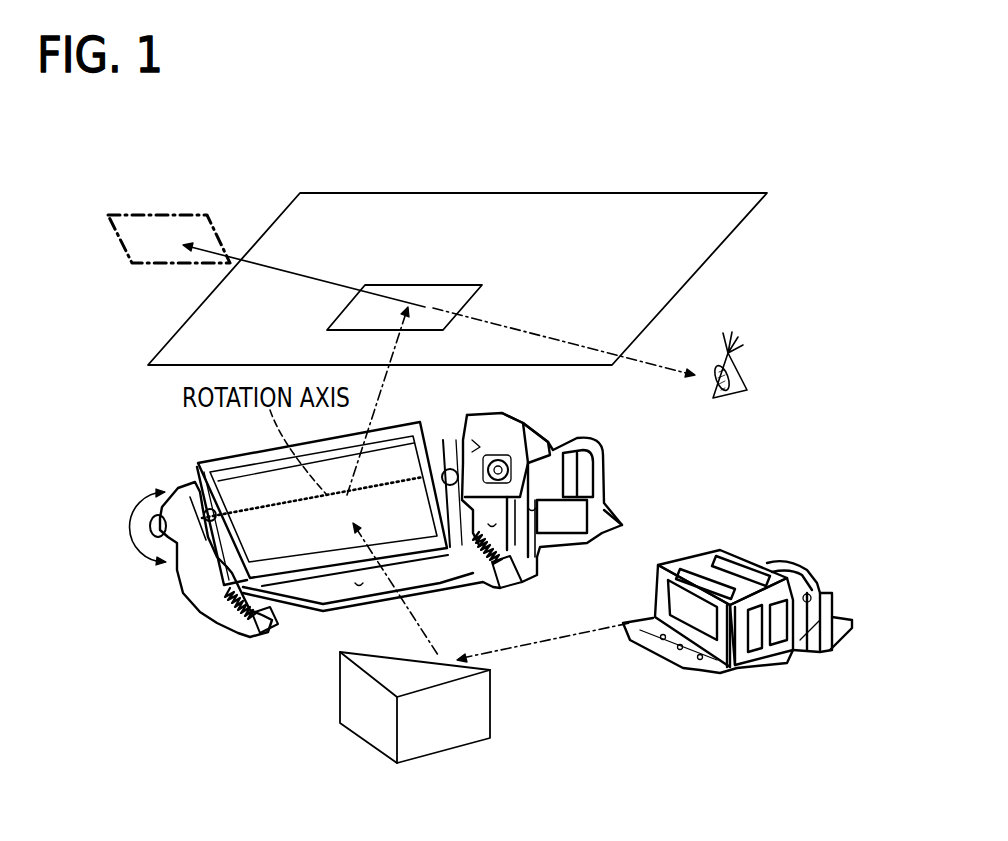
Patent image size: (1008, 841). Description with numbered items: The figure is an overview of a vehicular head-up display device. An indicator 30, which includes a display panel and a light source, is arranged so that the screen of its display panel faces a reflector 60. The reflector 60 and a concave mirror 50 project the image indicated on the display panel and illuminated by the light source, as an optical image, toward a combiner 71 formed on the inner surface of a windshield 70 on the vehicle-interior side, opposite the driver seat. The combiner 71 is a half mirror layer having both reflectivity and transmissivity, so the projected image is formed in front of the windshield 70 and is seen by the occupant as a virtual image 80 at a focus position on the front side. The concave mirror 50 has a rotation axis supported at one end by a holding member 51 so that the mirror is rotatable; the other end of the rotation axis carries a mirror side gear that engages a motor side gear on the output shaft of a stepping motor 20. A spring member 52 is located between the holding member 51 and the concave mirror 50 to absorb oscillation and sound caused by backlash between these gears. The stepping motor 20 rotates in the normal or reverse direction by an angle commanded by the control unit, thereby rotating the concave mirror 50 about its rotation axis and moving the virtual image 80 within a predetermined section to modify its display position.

The stepping motor 20 is at (610, 446).
The indicator 30 is at (781, 540).
The concave mirror 50 is at (245, 468).
The holding member 51 is at (198, 590).
The spring member 52 is at (238, 628).
The reflector 60 is at (329, 684).
The windshield 70 is at (603, 210).
The combiner 71 is at (430, 283).
The image (virtual image) 80 is at (188, 213).